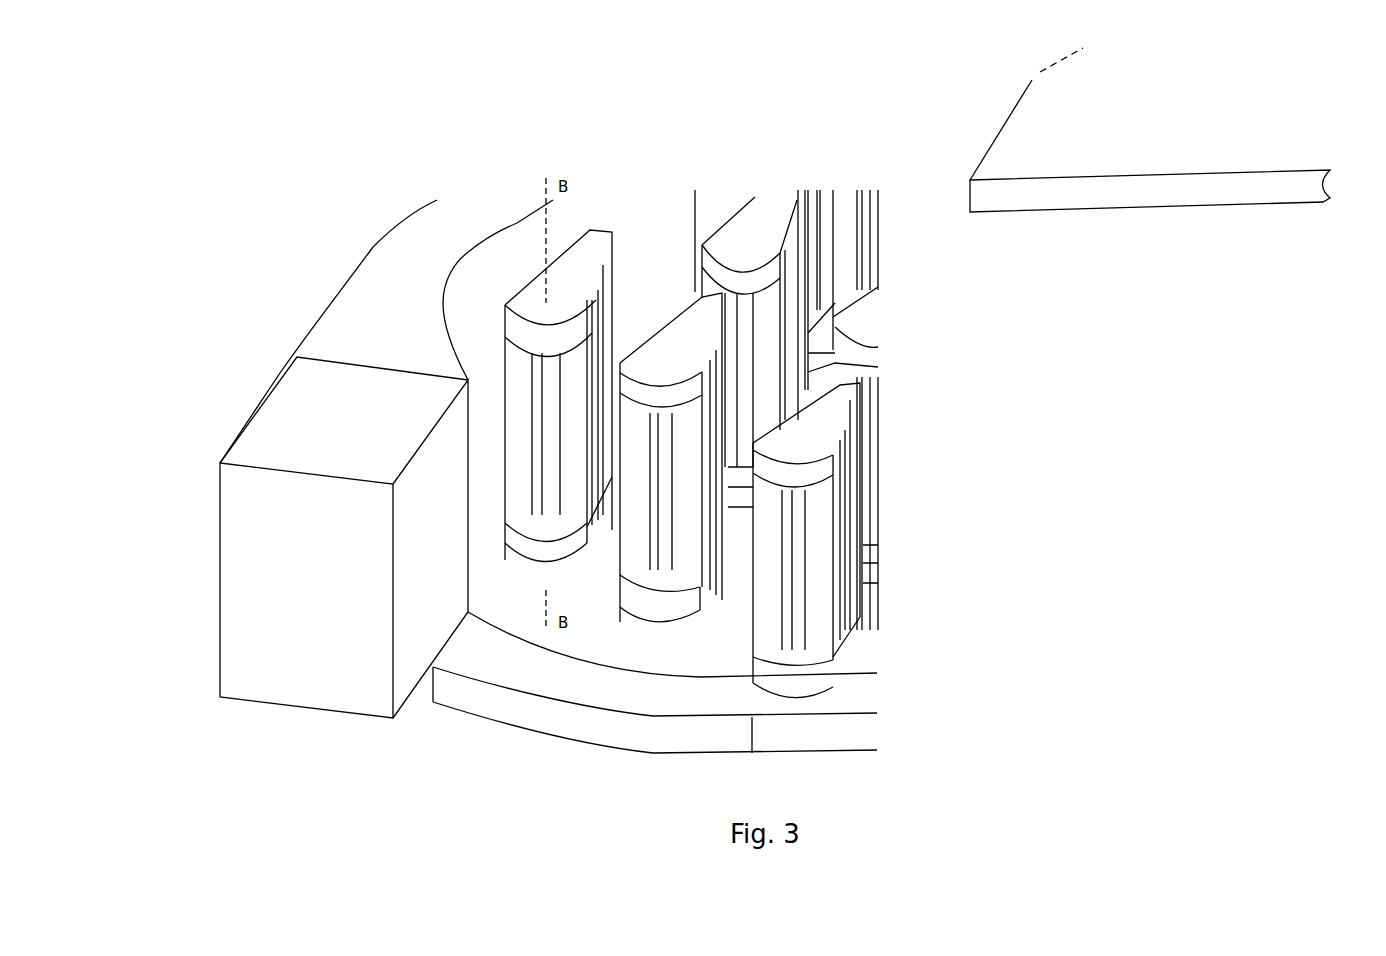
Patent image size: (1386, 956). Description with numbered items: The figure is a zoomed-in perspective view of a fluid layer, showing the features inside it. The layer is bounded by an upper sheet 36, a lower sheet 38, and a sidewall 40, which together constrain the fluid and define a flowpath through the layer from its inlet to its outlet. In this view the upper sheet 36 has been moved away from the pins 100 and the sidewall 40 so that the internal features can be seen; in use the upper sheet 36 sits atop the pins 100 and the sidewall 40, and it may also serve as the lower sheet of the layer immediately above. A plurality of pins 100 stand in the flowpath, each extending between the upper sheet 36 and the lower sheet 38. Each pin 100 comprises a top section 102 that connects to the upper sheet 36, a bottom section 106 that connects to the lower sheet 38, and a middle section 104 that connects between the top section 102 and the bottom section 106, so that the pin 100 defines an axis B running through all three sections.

The upper sheet 36 is at (1158, 143).
The lower sheet 38 is at (580, 728).
The sidewall 40 is at (407, 280).
The pin 100 is at (384, 415).
The top section 102 is at (545, 333).
The middle section 104 is at (525, 435).
The bottom section 106 is at (533, 550).